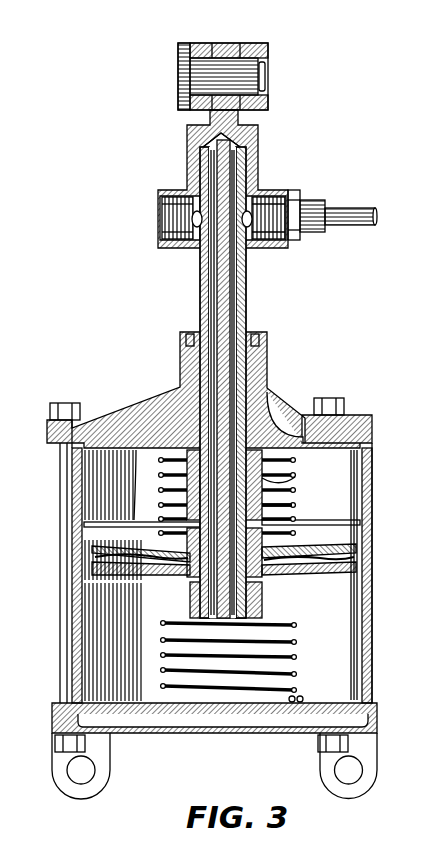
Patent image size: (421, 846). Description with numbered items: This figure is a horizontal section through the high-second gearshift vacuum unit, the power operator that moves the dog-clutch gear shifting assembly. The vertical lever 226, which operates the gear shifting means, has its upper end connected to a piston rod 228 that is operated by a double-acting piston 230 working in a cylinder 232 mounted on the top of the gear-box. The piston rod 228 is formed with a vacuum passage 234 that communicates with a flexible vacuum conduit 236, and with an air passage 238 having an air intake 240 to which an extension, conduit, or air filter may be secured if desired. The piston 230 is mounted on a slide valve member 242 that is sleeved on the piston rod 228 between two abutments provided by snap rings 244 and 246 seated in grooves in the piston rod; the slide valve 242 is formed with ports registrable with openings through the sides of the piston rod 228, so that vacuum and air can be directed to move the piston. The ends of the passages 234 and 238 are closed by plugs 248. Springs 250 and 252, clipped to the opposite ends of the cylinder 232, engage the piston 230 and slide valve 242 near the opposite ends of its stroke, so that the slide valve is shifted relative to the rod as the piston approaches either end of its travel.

The vertical lever 226 is at (252, 48).
The piston rod 228 is at (246, 292).
The double-acting piston 230 is at (105, 590).
The cylinder 232 is at (95, 640).
The vacuum passage 234 is at (233, 330).
The flexible vacuum conduit 236 is at (350, 210).
The air passage 238 is at (200, 270).
The air intake 240 is at (160, 212).
The slide valve member 242 is at (262, 577).
The snap ring 244 is at (272, 478).
The snap ring 246 is at (258, 608).
The plugs 248 is at (236, 607).
The spring 250 is at (222, 705).
The spring 252 is at (275, 506).